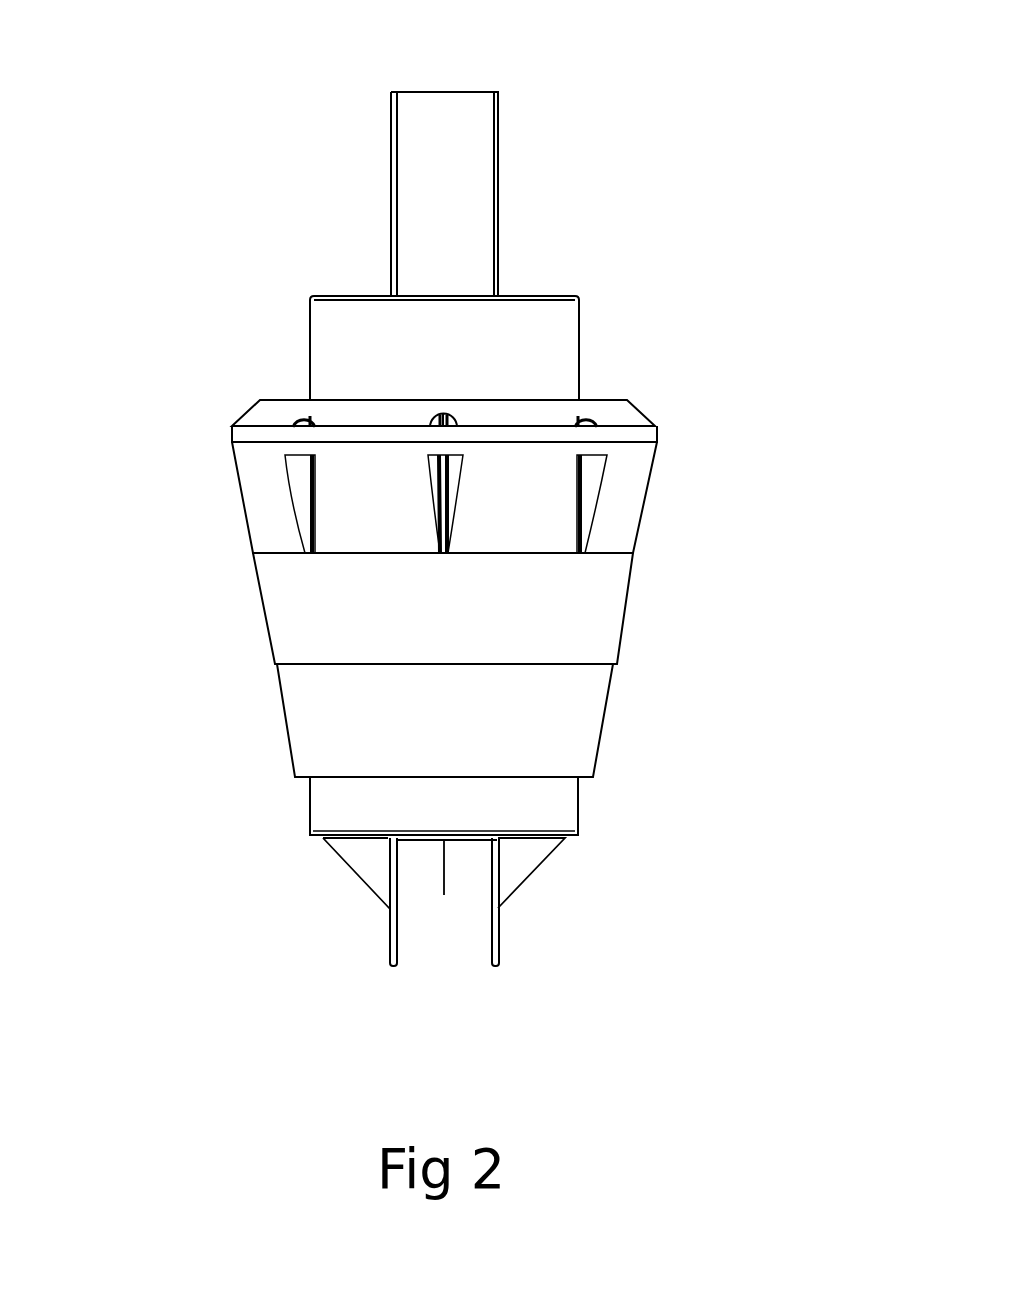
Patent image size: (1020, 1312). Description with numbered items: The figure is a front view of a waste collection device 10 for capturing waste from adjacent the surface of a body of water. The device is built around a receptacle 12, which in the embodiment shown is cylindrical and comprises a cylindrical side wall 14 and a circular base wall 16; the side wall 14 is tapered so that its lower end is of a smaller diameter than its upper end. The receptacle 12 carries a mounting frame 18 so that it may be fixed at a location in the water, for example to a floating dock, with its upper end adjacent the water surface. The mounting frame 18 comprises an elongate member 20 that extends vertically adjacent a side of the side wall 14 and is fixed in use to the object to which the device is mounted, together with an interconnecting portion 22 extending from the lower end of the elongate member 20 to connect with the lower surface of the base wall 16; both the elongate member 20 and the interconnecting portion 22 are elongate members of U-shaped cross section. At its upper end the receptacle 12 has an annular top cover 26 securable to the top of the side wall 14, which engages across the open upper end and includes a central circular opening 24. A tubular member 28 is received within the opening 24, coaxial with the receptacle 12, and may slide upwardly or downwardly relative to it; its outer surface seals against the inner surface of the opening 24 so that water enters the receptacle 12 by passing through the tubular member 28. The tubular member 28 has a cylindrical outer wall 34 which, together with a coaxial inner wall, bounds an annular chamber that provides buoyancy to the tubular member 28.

The waste collection device 10 is at (632, 165).
The receptacle 12 is at (622, 532).
The cylindrical side wall 14 is at (600, 633).
The circular base wall 16 is at (525, 845).
The mounting frame 18 is at (377, 224).
The elongate member 20 is at (478, 125).
The interconnecting portion 22 is at (382, 937).
The opening 24 is at (588, 395).
The top cover 26 is at (287, 395).
The tubular member 28 is at (560, 326).
The cylindrical outer wall 34 is at (322, 332).